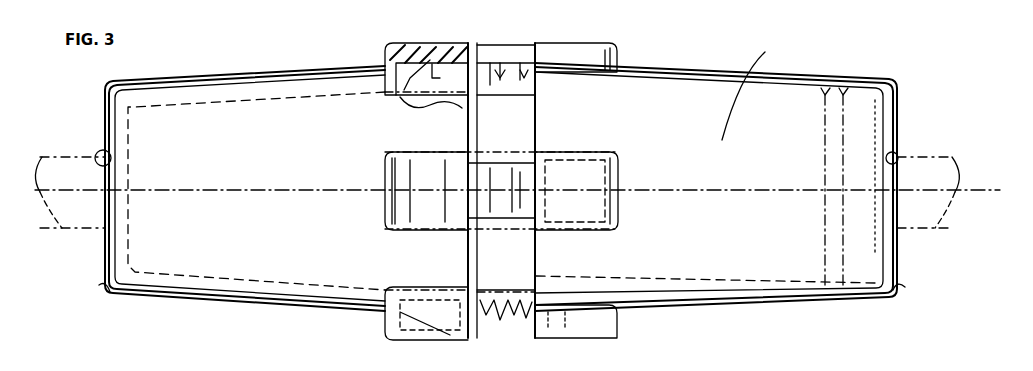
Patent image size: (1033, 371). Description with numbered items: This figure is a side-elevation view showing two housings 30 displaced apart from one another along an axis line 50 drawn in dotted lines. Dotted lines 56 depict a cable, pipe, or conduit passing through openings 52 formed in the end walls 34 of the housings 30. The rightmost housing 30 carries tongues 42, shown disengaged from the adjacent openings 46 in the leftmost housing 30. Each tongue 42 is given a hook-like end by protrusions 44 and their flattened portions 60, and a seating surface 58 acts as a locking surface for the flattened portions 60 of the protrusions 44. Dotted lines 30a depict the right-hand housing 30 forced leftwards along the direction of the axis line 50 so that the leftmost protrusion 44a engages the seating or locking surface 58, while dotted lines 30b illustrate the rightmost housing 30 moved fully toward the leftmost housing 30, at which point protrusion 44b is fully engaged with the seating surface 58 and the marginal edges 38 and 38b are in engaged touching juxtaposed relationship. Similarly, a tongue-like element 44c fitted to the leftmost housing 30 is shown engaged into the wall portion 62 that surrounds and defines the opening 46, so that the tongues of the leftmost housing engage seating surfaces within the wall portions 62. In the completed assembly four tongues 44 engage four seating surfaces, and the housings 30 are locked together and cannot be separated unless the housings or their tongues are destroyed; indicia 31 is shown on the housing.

The housing 30 is at (221, 72).
The dotted lines 30a is at (850, 88).
The dotted lines 30b is at (836, 80).
The indicia 31 is at (743, 90).
The end wall 34 is at (98, 280).
The marginal edge 38 is at (450, 262).
The marginal edge 38b is at (478, 286).
The tongue 42 is at (535, 84).
The protrusion 44 is at (498, 55).
The leftmost protrusion 44a is at (428, 45).
The protrusion 44b is at (422, 100).
The tongue-like element 44c is at (548, 170).
The opening 46 is at (474, 45).
The axis line 50 is at (517, 209).
The opening 52 is at (98, 152).
The dotted lines 56 is at (58, 150).
The seating surface 58 is at (440, 58).
The flattened portion 60 is at (512, 60).
The wall portion 62 is at (600, 182).